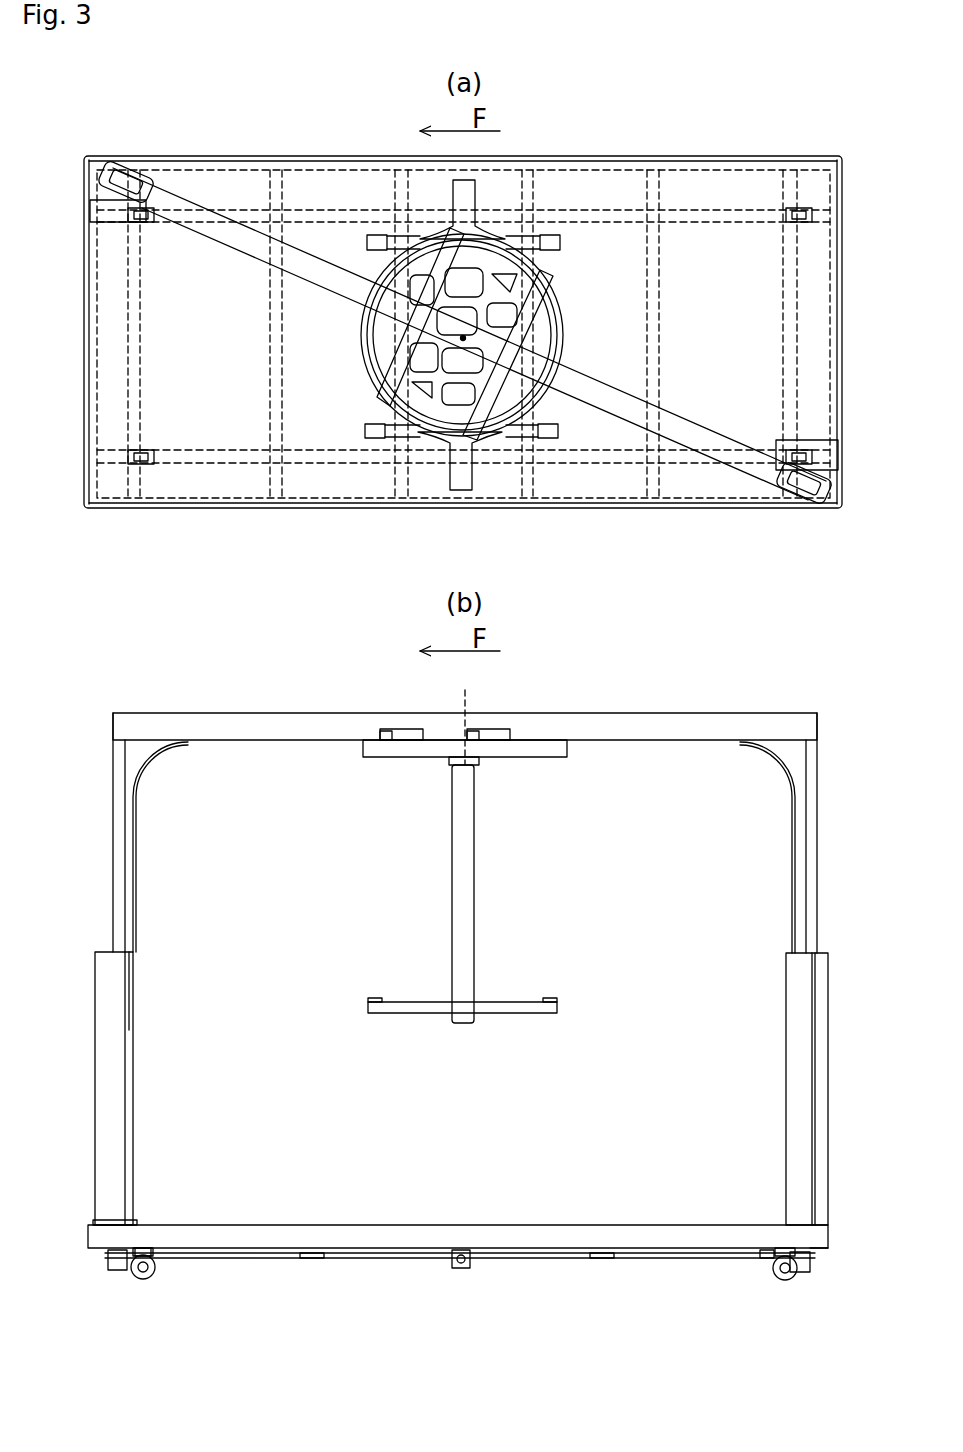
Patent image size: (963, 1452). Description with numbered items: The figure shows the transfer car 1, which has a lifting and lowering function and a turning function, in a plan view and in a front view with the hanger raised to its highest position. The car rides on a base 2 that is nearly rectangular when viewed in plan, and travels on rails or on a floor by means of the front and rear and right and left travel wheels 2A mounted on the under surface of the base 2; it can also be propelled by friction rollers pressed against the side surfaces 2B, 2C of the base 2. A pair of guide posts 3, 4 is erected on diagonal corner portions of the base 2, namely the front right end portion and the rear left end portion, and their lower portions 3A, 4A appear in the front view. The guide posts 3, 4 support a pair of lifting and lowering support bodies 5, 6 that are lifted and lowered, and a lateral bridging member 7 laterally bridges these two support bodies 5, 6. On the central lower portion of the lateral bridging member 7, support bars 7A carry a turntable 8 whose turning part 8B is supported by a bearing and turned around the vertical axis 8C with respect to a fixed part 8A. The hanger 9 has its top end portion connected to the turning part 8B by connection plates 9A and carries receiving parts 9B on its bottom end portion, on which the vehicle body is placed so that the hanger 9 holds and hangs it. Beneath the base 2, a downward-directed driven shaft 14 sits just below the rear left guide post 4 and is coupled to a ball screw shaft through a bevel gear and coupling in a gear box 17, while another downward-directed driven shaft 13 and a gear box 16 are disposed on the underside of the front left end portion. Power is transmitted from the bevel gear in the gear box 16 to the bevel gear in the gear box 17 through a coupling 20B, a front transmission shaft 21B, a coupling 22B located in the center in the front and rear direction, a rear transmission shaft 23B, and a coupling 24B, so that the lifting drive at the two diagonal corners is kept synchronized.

The transfer car 1 is at (812, 138).
The base 2 is at (737, 188).
The travel wheels 2A is at (152, 224).
The side surface 2B is at (705, 508).
The side surface 2C is at (645, 158).
The guide post 3 is at (124, 160).
The left bracket plate 3A is at (118, 1070).
The guide post 4 is at (832, 468).
The right bracket plate 4A is at (797, 1012).
The lifting and lowering support body 5 is at (118, 765).
The lifting and lowering support body 6 is at (812, 770).
The lateral bridging member 7 is at (620, 390).
The support bars 7A is at (380, 394).
The turntable 8 is at (558, 276).
The fixed part 8A is at (563, 350).
The turning part 8B is at (560, 337).
The vertical axis 8C is at (460, 338).
The hanger 9 is at (458, 402).
The connection plates 9A is at (470, 763).
The receiving parts 9B is at (542, 236).
The driven shaft 13 is at (120, 1272).
The driven shaft 14 is at (798, 1273).
The gear box 16 is at (110, 1262).
The gear box 17 is at (816, 1260).
The coupling 20B is at (138, 1250).
The front transmission shaft 21B is at (312, 1260).
The coupling 22B is at (464, 1270).
The rear transmission shaft 23B is at (598, 1260).
The coupling 24B is at (768, 1254).